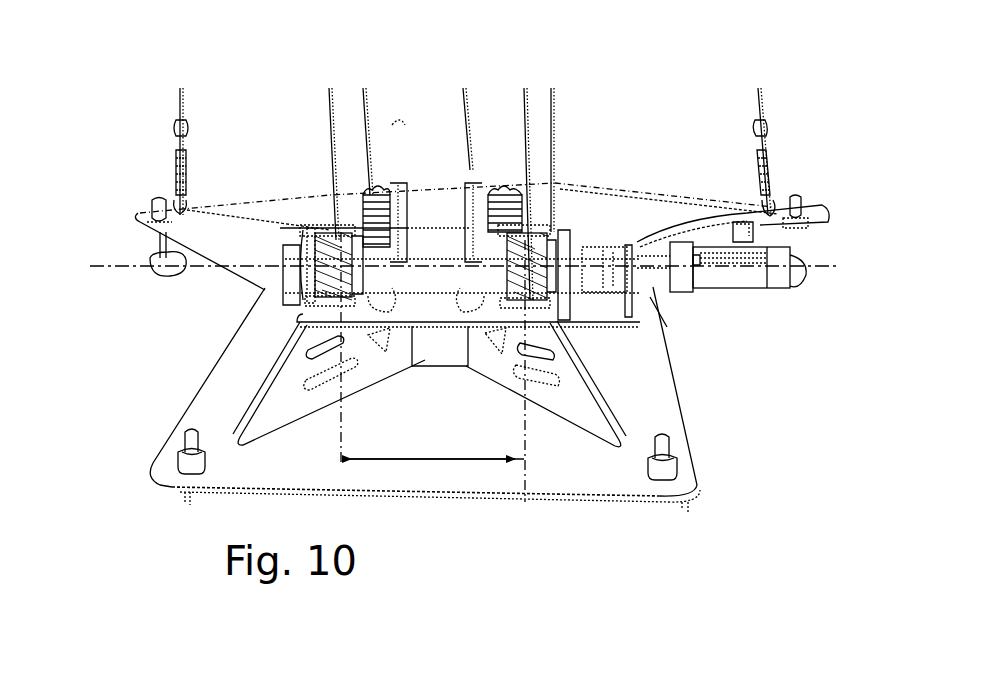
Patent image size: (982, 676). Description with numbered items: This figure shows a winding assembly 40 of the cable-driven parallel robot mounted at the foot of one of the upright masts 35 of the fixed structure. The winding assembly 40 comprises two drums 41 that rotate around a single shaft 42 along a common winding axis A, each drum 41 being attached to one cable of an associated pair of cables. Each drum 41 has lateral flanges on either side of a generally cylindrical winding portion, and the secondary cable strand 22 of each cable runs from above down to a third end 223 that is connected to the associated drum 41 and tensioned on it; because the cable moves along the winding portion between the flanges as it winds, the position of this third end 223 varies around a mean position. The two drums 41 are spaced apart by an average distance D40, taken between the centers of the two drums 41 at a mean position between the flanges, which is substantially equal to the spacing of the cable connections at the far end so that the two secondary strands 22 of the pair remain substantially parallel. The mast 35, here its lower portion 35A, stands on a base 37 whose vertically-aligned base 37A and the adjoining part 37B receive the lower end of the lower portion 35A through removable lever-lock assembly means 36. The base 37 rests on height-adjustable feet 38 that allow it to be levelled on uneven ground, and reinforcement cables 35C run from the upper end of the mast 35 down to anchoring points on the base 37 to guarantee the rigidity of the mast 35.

The winding axis A is at (107, 268).
The secondary cable strand 22 is at (330, 100).
The mast 35 is at (557, 100).
The lower portion of the mast 35A is at (387, 123).
The reinforcement cable 35C is at (178, 108).
The assembly means 36 is at (480, 172).
The base 37 is at (695, 433).
The vertically-aligned base 37A is at (427, 343).
The second gusset bracket 37B is at (598, 423).
The height-adjustable foot 38 is at (153, 205).
The winding assembly 40 is at (727, 277).
The drum 41 is at (329, 233).
The shaft 42 is at (437, 270).
The third end of the secondary strand 223 is at (341, 234).
The average distance between the two drums D40 is at (427, 460).